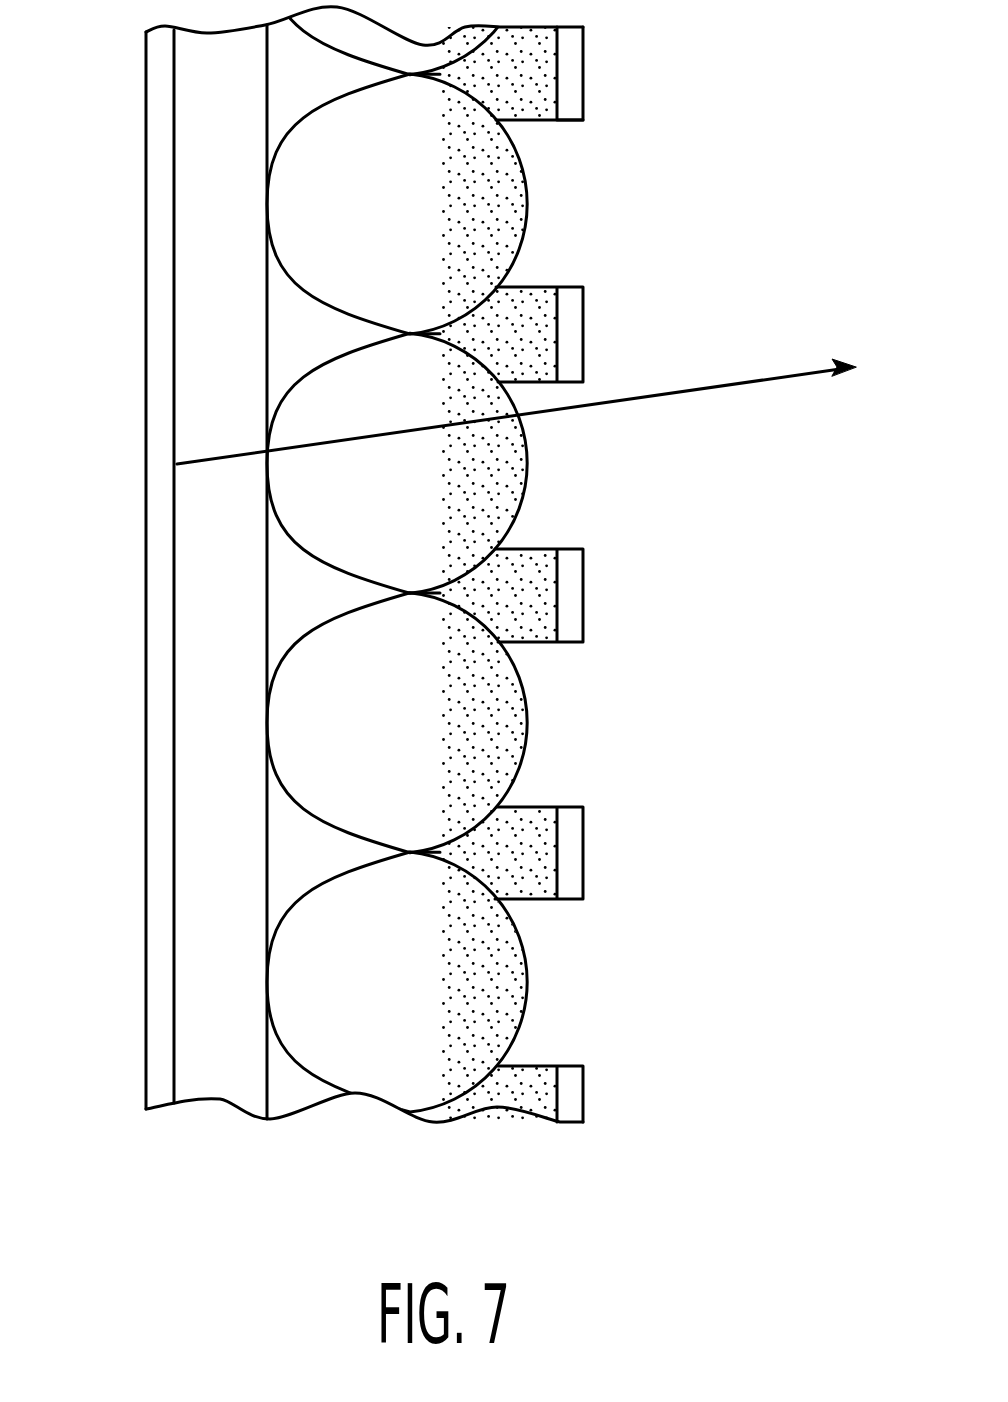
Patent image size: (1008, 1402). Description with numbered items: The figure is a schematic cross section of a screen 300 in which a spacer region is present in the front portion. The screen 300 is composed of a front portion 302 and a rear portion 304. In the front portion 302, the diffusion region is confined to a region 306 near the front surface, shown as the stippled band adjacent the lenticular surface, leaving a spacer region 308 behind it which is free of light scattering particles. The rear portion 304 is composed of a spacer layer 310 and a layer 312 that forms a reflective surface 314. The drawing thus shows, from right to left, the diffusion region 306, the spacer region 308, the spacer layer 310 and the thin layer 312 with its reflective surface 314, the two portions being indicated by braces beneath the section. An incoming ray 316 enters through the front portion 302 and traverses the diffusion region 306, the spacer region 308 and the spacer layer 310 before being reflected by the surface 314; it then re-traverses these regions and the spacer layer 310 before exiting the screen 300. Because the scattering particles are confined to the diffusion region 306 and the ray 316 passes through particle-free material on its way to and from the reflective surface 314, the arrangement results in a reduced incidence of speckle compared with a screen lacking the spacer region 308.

The screen 300 is at (92, 610).
The front portion 302 is at (585, 1147).
The rear portion 304 is at (283, 1147).
The diffusion region 306 is at (508, 987).
The spacer region 308 is at (407, 958).
The spacer layer 310 is at (200, 960).
The layer 312 is at (160, 903).
The reflective surface 314 is at (177, 840).
The incoming ray 316 is at (177, 464).